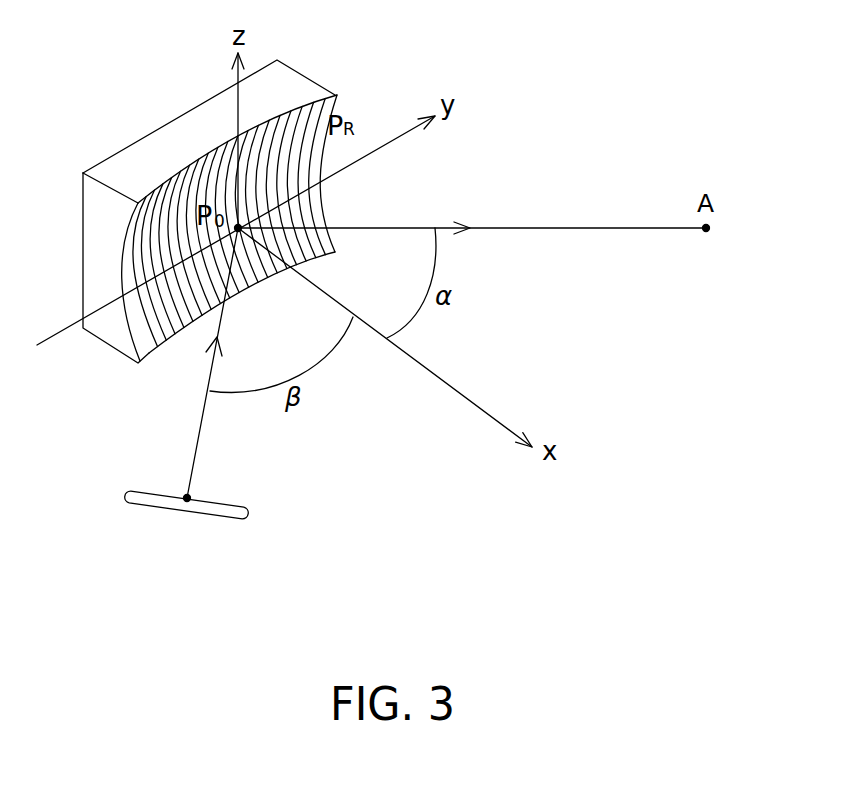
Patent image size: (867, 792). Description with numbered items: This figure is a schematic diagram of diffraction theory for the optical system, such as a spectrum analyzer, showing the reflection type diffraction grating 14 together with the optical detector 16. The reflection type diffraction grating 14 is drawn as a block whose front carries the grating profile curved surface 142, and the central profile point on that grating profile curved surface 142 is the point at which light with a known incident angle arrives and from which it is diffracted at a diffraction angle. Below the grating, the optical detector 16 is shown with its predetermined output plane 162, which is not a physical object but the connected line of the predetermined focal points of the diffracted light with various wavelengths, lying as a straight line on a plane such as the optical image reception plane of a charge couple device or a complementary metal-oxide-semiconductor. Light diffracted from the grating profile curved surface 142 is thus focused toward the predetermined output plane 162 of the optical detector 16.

The reflection type diffraction grating 14 is at (191, 253).
The grating profile curved surface 142 is at (145, 340).
The optical detector 16 is at (205, 516).
The predetermined output plane 162 is at (215, 503).